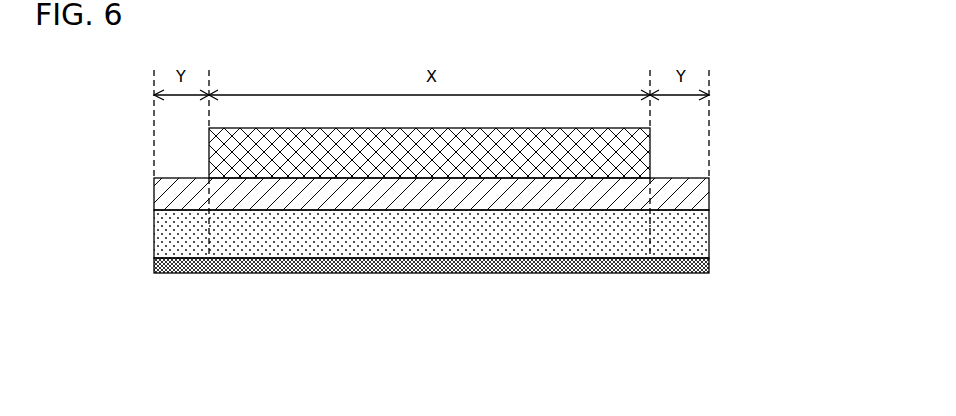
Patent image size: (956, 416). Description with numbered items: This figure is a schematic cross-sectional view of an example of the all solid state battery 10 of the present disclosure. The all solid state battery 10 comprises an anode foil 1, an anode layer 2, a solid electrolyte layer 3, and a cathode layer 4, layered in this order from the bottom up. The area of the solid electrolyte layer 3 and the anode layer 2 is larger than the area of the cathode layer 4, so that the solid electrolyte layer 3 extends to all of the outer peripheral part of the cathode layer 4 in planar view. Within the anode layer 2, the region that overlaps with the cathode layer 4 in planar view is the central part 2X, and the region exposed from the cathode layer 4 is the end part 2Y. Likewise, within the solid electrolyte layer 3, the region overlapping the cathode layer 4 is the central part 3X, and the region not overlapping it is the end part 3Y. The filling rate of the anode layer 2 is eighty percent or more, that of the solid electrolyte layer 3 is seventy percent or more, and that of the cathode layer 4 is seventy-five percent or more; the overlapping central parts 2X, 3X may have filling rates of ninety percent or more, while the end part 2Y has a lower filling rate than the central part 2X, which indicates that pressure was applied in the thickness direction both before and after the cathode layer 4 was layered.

The all solid state battery 10 is at (604, 57).
The cathode layer 4 is at (630, 150).
The solid electrolyte layer 3 is at (431, 279).
The central part of solid electrolyte layer 3X is at (252, 193).
The end part of solid electrolyte layer 3Y is at (189, 193).
The anode layer 2 is at (431, 297).
The central part of anode layer 2X is at (615, 228).
The end part of anode layer 2Y is at (677, 228).
The anode foil 1 is at (703, 268).